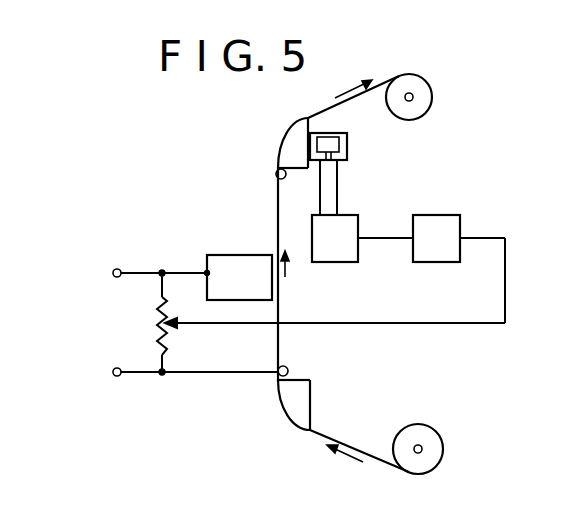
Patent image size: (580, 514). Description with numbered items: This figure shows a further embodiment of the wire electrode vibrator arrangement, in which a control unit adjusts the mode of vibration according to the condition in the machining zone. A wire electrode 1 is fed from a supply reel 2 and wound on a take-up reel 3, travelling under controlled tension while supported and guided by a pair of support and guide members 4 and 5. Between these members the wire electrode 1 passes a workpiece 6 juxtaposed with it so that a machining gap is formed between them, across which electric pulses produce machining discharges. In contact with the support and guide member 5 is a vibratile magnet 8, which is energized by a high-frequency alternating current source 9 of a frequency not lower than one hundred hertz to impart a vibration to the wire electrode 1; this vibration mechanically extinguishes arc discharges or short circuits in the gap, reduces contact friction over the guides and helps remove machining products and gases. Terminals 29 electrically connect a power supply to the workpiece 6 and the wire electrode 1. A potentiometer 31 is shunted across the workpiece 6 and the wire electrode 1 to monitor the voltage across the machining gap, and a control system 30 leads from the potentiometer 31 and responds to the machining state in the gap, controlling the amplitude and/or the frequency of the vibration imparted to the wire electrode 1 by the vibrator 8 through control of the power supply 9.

The wire electrode 1 is at (275, 218).
The supply reel 2 is at (434, 432).
The take-up reel 3 is at (425, 108).
The support and guide member 4 is at (312, 400).
The support and guide member 5 is at (282, 153).
The workpiece 6 is at (220, 255).
The vibratile magnet 8 is at (347, 145).
The high-frequency alternating current source 9 is at (335, 256).
The terminals 29 is at (112, 281).
The control system 30 is at (445, 256).
The potentiometer 31 is at (314, 322).